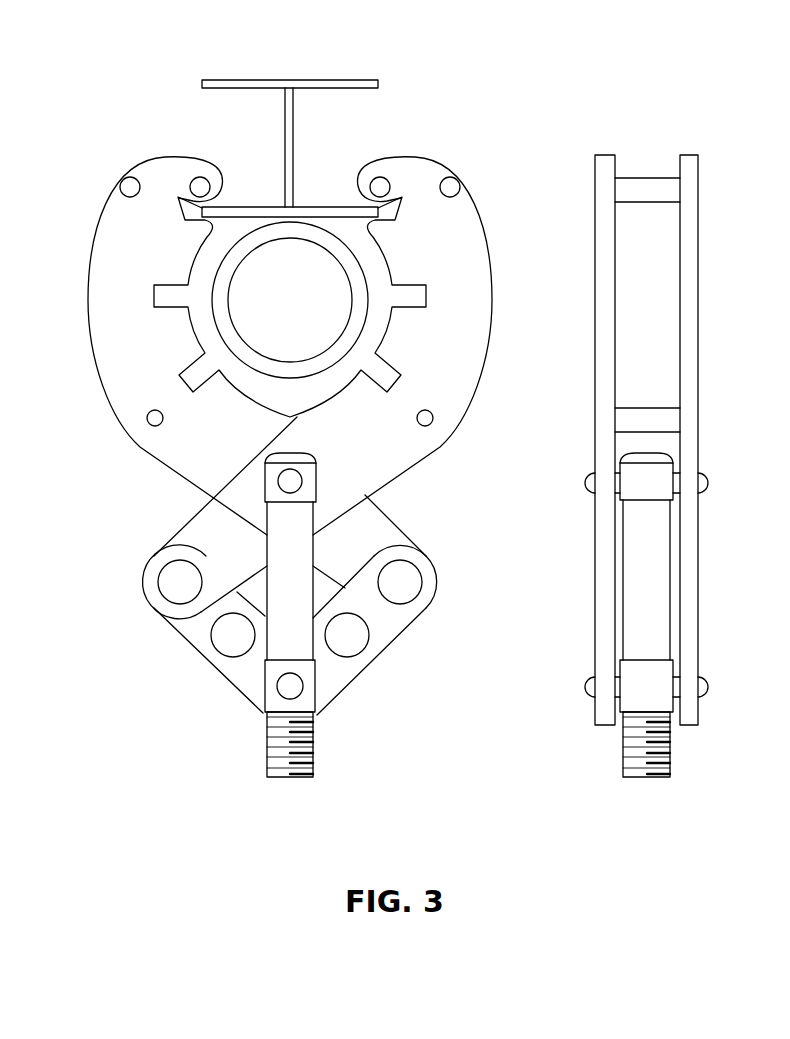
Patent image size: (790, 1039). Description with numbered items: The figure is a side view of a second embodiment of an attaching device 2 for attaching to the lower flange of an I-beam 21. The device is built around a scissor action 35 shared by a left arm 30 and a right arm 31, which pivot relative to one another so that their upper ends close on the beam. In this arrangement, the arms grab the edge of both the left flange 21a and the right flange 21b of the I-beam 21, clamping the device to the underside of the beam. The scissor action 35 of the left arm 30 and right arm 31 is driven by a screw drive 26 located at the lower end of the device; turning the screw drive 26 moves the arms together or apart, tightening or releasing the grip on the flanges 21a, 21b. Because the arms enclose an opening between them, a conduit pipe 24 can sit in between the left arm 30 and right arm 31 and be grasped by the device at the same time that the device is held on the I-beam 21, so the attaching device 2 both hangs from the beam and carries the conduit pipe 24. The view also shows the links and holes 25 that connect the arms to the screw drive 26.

The attaching device 2 is at (365, 473).
The I-beam 21 is at (298, 115).
The left flange 21a is at (262, 207).
The right flange 21b is at (327, 205).
The conduit pipe 24 is at (277, 297).
The pivot holes / link connections 25 is at (232, 635).
The screw drive 26 is at (265, 743).
The left arm 30 is at (143, 383).
The right arm 31 is at (443, 372).
The scissor action 35 is at (270, 488).